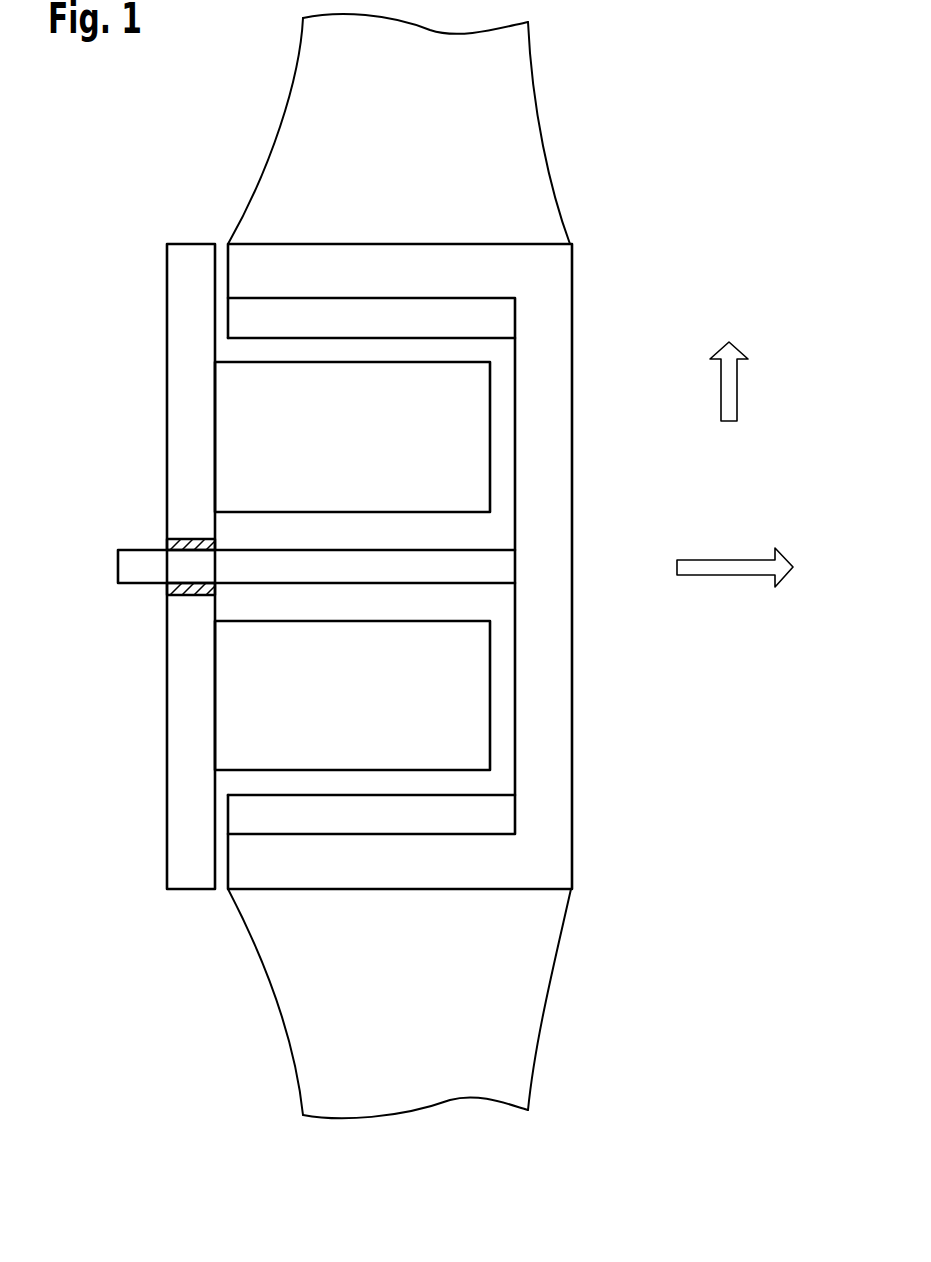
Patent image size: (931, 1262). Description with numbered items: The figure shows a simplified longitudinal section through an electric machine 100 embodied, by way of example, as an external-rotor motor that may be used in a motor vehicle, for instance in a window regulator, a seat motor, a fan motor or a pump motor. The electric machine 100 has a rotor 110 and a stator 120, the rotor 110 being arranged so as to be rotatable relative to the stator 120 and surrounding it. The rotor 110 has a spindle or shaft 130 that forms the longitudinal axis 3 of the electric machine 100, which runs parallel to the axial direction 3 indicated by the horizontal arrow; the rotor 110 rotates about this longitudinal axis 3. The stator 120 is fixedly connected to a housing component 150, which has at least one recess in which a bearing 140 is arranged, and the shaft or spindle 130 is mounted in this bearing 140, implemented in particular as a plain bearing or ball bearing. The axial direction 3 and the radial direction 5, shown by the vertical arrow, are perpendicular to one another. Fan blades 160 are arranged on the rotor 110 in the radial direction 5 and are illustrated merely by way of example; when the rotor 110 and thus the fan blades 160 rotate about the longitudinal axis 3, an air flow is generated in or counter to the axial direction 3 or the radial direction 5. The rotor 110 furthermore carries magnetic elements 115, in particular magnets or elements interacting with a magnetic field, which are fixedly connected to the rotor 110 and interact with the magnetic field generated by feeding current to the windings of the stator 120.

The electric machine 100 is at (632, 80).
The rotor 110 is at (558, 669).
The magnetic elements 115 is at (493, 322).
The stator 120 is at (465, 471).
The spindle or shaft 130 is at (130, 569).
The bearing 140 is at (187, 538).
The housing component 150 is at (178, 843).
The fan blades 160 is at (463, 175).
The radial direction 5 is at (730, 388).
The longitudinal axis / axial direction 3 is at (726, 565).